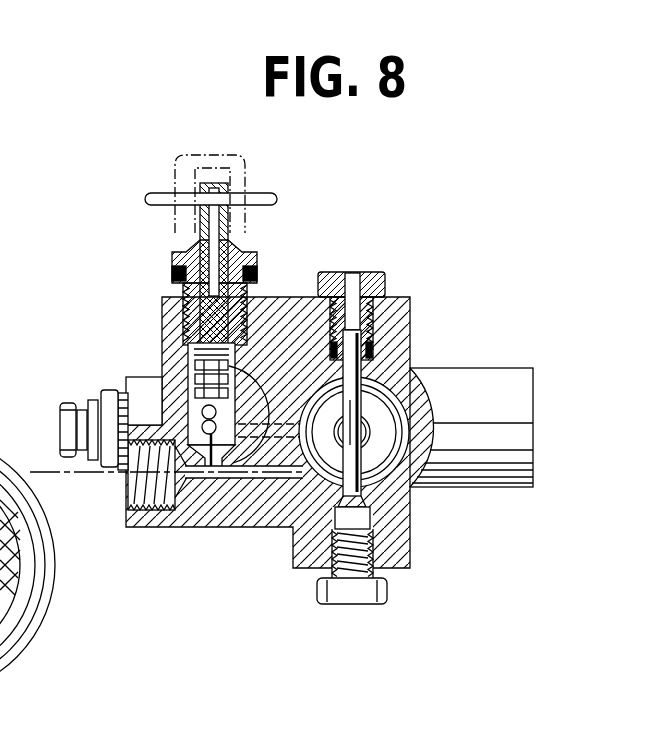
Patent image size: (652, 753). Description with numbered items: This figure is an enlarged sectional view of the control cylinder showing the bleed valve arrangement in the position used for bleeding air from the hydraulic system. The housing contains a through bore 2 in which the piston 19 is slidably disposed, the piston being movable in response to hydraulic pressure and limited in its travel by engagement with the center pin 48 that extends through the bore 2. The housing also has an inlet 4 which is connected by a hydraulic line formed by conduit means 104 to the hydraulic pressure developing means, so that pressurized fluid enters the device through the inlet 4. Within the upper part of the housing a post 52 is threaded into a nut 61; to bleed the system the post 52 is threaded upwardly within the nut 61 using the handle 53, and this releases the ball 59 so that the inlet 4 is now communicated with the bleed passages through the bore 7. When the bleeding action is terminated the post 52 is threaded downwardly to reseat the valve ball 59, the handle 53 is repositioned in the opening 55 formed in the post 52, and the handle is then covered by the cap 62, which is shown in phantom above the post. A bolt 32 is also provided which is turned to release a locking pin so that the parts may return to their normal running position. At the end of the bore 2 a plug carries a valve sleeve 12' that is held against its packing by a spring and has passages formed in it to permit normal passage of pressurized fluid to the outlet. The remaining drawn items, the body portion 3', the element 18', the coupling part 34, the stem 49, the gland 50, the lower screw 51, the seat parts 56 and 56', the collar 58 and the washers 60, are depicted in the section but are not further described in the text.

The through bore 2 is at (398, 438).
The body boss 3' is at (471, 376).
The inlet 4 is at (175, 523).
The bore 7 is at (182, 518).
The sleeve 12' is at (64, 565).
The wheel hub 18' is at (59, 565).
The piston 19 is at (380, 447).
The bolt 32 is at (62, 440).
The coupling sleeve 34 is at (103, 470).
The center pin 48 is at (362, 411).
The stem 49 is at (361, 385).
The gland nut 50 is at (384, 272).
The retaining screw 51 is at (353, 604).
The post 52 is at (207, 320).
The handle 53 is at (277, 197).
The opening 55 is at (212, 235).
The needle guide 56 is at (165, 394).
The seat chamber 56' is at (264, 493).
The collar 58 is at (200, 402).
The ball 59 is at (165, 415).
The spring washers 60 is at (196, 366).
The nut 61 is at (240, 250).
The cap 62 is at (205, 152).
The conduit means 104 is at (215, 473).